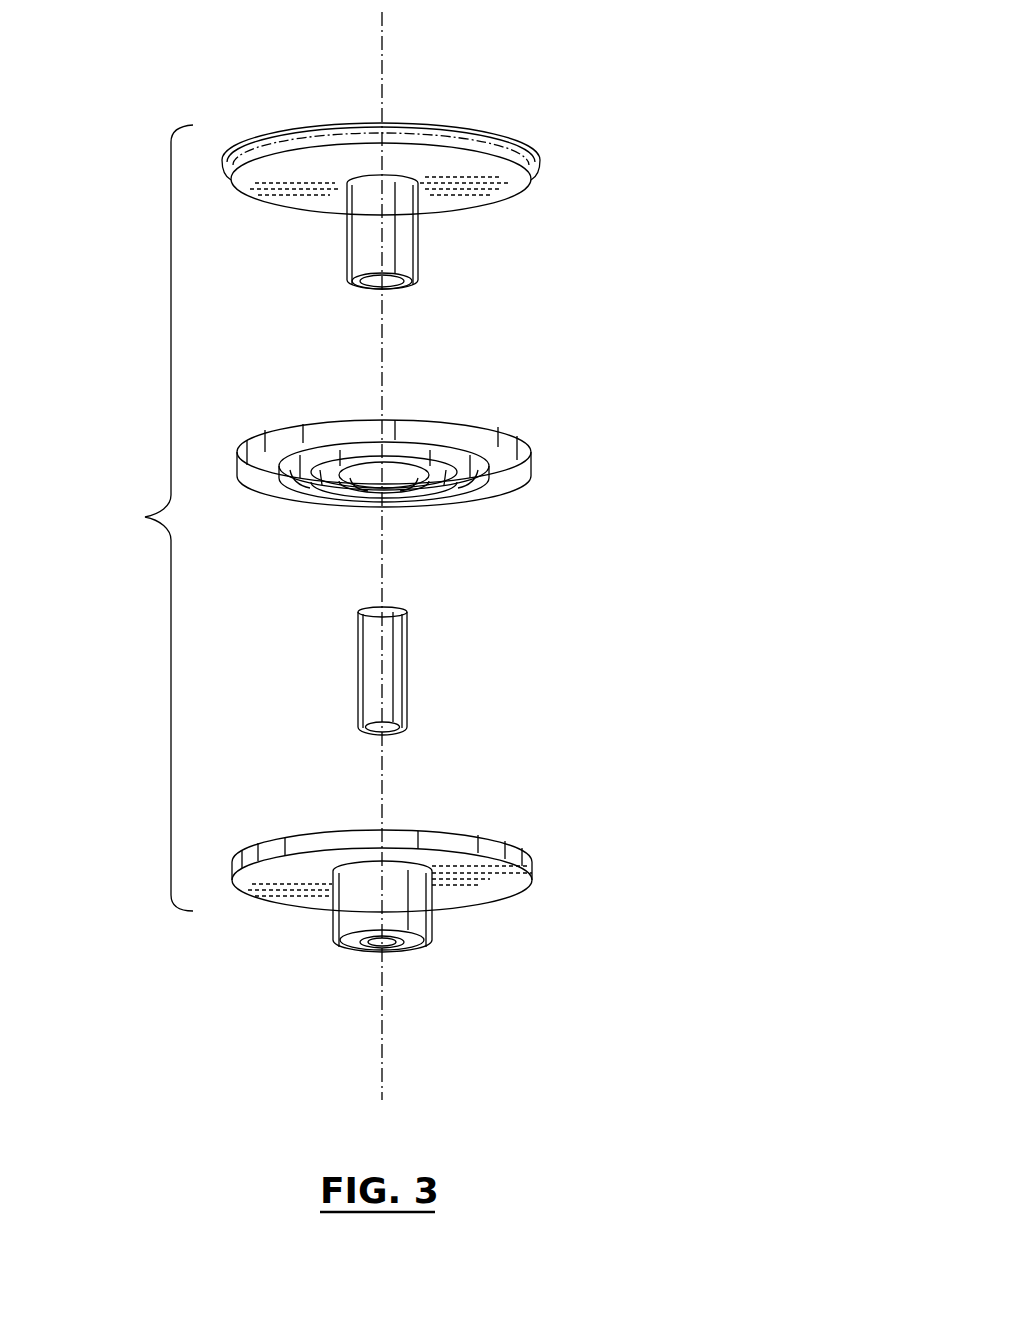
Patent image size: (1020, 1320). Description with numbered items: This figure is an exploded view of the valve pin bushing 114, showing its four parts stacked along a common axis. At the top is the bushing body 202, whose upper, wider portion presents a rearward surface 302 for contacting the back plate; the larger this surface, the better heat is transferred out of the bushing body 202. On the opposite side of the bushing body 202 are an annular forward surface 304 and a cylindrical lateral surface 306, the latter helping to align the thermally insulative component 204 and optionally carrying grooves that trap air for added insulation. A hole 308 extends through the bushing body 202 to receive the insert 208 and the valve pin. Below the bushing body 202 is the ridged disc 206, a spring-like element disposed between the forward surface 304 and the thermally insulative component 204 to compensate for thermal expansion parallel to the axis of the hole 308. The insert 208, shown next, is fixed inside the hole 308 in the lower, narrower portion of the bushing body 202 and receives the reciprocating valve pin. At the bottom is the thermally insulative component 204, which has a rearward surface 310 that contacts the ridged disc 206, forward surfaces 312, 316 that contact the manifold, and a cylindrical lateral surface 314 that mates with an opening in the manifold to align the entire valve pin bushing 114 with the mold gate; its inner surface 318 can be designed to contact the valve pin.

The valve pin bushing 114 is at (138, 518).
The bushing body 202 is at (486, 192).
The thermally insulative component 204 is at (483, 918).
The ridged disc 206 is at (560, 472).
The insert 208 is at (430, 654).
The rearward surface 302 is at (494, 133).
The forward surface 304 is at (500, 173).
The lateral surface 306 is at (398, 242).
The hole 308 is at (391, 300).
The rearward surface 310 is at (492, 842).
The forward surface 312 is at (503, 887).
The lateral surface 314 is at (417, 922).
The forward surface 316 is at (415, 947).
The inner surface 318 is at (377, 950).